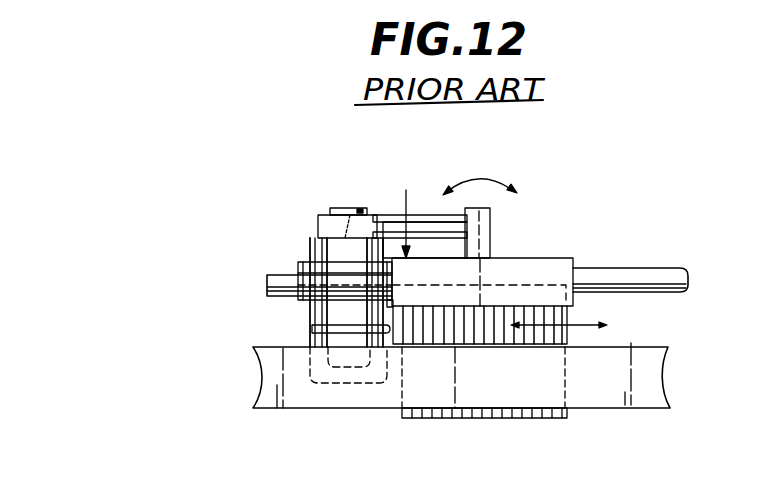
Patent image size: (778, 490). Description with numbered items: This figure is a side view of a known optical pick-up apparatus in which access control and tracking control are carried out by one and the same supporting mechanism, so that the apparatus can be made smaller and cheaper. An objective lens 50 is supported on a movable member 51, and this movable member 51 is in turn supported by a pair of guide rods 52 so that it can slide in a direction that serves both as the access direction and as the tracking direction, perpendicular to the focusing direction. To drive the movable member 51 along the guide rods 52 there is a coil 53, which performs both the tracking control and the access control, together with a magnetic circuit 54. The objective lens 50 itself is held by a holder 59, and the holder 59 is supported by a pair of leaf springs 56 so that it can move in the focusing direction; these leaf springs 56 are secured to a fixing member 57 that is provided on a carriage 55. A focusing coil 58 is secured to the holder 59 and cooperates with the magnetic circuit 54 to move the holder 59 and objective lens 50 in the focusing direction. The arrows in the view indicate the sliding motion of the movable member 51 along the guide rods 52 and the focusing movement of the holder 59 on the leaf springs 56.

The objective lens 50 is at (352, 209).
The movable member 51 is at (582, 248).
The guide rods 52 is at (668, 274).
The coil 53 is at (493, 418).
The magnetic circuit 54 is at (631, 406).
The carriage 55 is at (549, 267).
The leaf springs 56 is at (420, 212).
The fixing member 57 is at (490, 216).
The focusing coil 58 is at (310, 248).
The holder 59 is at (320, 215).